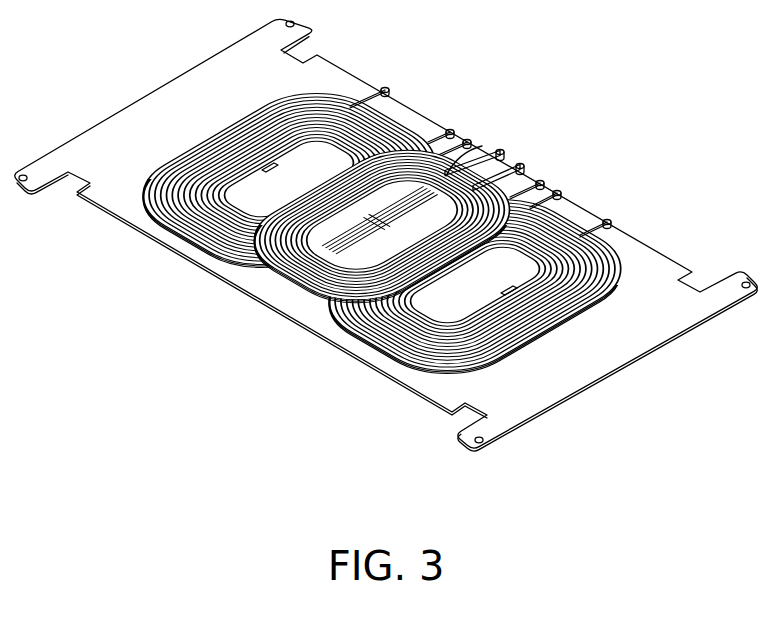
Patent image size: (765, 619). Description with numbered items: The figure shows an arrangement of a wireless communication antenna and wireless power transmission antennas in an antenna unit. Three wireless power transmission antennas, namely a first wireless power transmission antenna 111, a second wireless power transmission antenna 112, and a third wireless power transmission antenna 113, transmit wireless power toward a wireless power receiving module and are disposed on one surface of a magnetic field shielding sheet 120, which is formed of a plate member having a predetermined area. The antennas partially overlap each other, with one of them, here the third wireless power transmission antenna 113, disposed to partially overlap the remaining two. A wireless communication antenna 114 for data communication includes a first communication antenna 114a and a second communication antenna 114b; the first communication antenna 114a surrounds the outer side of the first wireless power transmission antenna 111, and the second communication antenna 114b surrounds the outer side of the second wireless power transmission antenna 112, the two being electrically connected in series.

The first wireless power transmission antenna 111 is at (357, 117).
The second wireless power transmission antenna 112 is at (560, 220).
The third wireless power transmission antenna 113 is at (483, 148).
The wireless communication antenna 114 is at (309, 310).
The first communication antenna 114a is at (195, 253).
The second communication antenna 114b is at (333, 355).
The magnetic field shielding sheet 120 is at (625, 373).